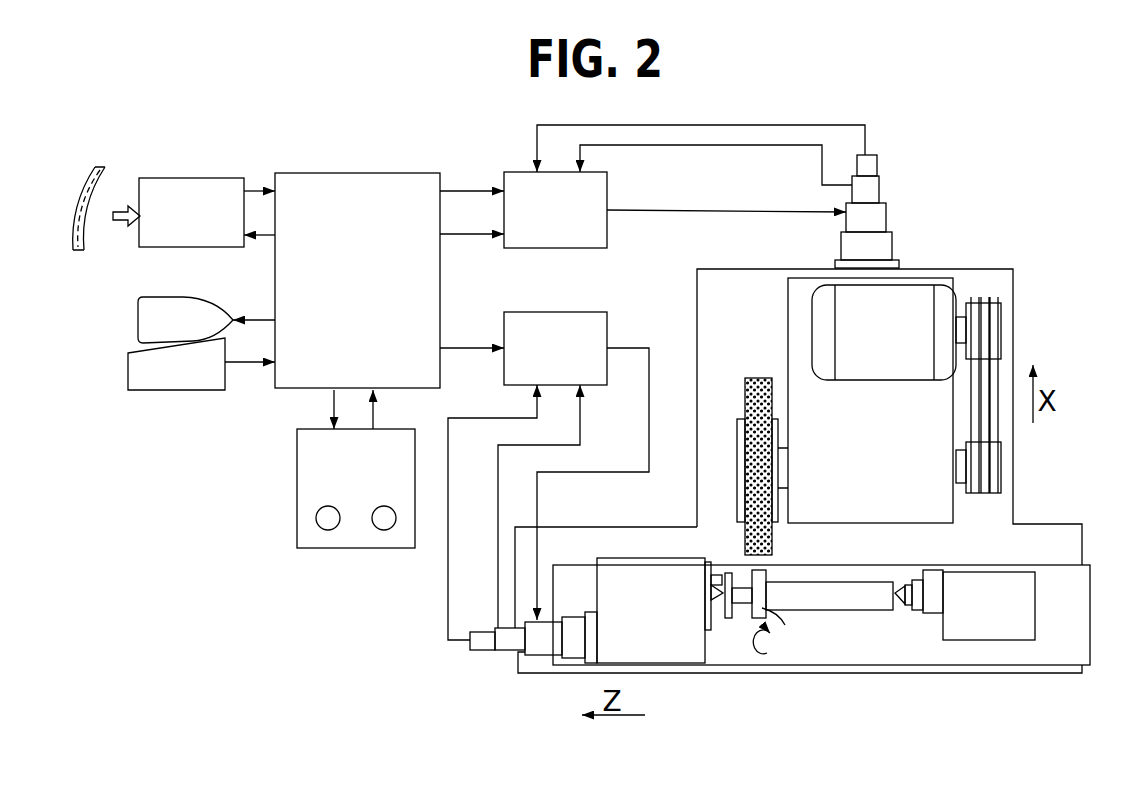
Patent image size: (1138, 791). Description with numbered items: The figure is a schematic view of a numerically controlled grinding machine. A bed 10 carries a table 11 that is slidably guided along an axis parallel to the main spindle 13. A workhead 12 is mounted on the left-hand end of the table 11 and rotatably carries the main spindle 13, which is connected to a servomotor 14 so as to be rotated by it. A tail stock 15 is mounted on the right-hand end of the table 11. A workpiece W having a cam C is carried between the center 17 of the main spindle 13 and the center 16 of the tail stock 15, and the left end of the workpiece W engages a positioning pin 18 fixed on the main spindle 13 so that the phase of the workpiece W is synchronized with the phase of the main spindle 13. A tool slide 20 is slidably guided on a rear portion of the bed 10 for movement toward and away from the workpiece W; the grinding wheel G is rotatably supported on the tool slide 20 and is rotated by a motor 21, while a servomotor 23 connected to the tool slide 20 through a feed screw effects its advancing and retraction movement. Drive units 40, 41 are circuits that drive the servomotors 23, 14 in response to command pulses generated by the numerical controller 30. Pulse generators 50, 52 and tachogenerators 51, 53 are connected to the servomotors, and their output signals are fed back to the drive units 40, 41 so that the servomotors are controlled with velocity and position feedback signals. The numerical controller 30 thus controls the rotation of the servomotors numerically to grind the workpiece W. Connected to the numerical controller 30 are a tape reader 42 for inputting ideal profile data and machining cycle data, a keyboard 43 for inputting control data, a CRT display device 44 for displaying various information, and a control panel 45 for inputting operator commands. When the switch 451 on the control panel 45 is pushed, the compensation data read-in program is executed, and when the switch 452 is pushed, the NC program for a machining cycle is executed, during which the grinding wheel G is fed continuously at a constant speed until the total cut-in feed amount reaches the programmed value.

The bed 10 is at (1080, 540).
The table 11 is at (1088, 640).
The workhead 12 is at (670, 665).
The main spindle 13 is at (707, 632).
The servomotor 14 is at (545, 657).
The tail stock 15 is at (995, 637).
The center of the tail stock 16 is at (900, 600).
The center of the main spindle 17 is at (715, 600).
The positioning pin 18 is at (720, 573).
The tool slide 20 is at (953, 512).
The motor 21 is at (915, 298).
The servomotor 23 is at (888, 218).
The numerical controller 30 is at (305, 172).
The drive unit 40 is at (507, 172).
The drive unit 41 is at (533, 311).
The tape reader 42 is at (167, 177).
The keyboard 43 is at (155, 392).
The CRT display device 44 is at (138, 316).
The control panel 45 is at (297, 437).
The switch 451 is at (323, 528).
The switch 452 is at (384, 530).
The pulse generator 50 is at (480, 652).
The tachogenerator 51 is at (507, 652).
The pulse generator 52 is at (873, 162).
The tachogenerator 53 is at (880, 190).
The grinding wheel G is at (745, 393).
The workpiece W is at (818, 610).
The cam C is at (776, 635).